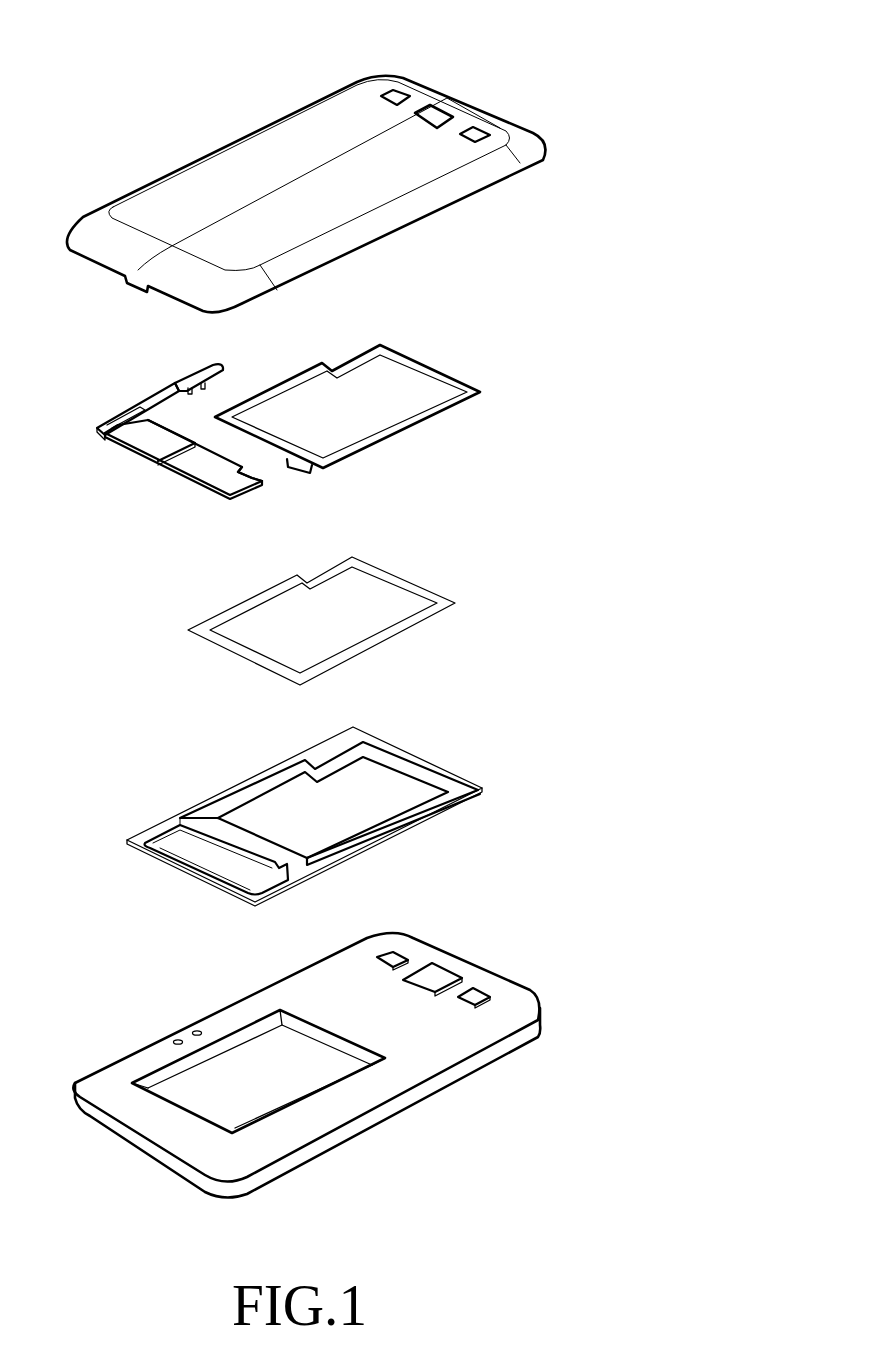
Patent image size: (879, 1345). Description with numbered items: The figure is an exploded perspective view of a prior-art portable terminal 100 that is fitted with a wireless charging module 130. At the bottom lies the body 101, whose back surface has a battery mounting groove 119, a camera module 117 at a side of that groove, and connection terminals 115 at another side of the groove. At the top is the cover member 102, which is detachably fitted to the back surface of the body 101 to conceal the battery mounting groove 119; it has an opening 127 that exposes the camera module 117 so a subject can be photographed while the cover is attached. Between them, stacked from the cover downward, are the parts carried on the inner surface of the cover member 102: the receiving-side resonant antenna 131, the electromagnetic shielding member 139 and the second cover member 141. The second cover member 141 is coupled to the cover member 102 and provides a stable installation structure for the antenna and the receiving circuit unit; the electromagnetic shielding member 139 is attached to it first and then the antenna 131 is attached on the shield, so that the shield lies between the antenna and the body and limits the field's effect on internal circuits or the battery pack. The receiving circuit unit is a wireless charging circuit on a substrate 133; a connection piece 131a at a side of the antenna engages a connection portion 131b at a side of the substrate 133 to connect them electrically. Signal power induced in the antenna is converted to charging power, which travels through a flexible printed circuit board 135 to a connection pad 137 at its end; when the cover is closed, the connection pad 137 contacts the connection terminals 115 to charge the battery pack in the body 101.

The portable terminal 100 is at (167, 86).
The body 101 is at (543, 999).
The cover member 102 is at (512, 110).
The connection terminals 115 is at (197, 1031).
The camera module 117 is at (438, 973).
The battery mounting groove 119 is at (262, 1083).
The opening 127 is at (433, 113).
The wireless charging module 130 is at (482, 381).
The receiving-side resonant antenna 131 is at (418, 362).
The connection piece 131a is at (310, 471).
The connection portion 131b is at (263, 468).
The substrate 133 is at (143, 458).
The flexible printed circuit board 135 is at (115, 417).
The connection pad 137 is at (188, 380).
The electromagnetic shielding member 139 is at (400, 630).
The second cover member 141 is at (465, 797).